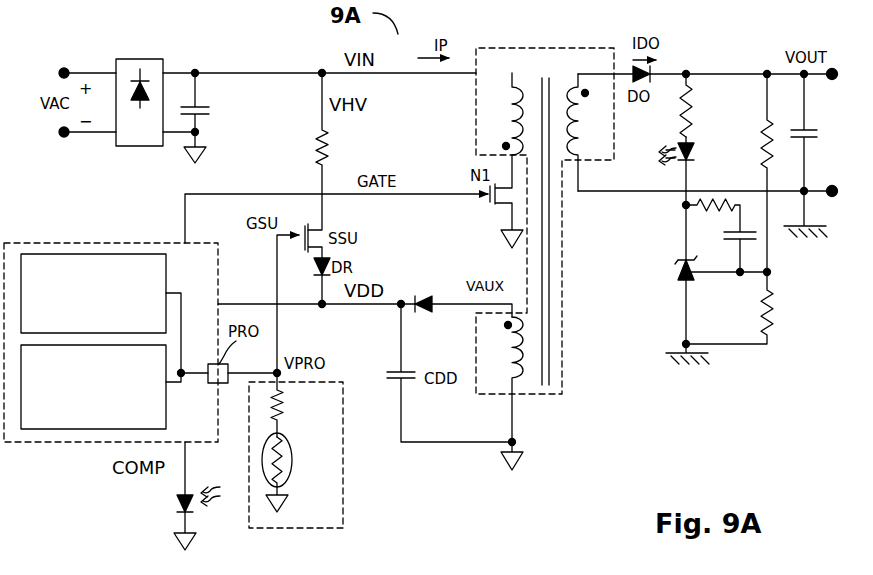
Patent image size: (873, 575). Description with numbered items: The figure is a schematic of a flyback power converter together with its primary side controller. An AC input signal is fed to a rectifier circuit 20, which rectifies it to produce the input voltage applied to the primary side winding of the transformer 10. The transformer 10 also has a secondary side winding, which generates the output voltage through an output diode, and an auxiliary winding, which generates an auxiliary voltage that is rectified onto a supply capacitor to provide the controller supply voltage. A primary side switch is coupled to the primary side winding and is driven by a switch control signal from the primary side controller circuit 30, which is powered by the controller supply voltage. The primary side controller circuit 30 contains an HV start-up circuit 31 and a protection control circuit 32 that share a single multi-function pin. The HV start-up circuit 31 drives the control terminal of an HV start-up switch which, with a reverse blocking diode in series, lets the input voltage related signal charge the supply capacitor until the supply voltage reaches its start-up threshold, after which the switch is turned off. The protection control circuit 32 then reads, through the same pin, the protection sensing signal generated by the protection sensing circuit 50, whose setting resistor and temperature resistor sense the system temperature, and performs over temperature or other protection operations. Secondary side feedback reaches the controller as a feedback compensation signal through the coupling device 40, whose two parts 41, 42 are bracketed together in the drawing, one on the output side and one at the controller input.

The transformer 10 is at (566, 48).
The rectifier circuit 20 is at (151, 127).
The primary side controller circuit 30 is at (210, 275).
The HV start-up circuit 31 is at (83, 325).
The protection control circuit 32 is at (83, 422).
The coupling device 40 is at (441, 489).
The light receiving element of optocoupler 41 is at (177, 504).
The light emitting element of optocoupler 42 is at (695, 151).
The protection sensing circuit 50 is at (325, 518).